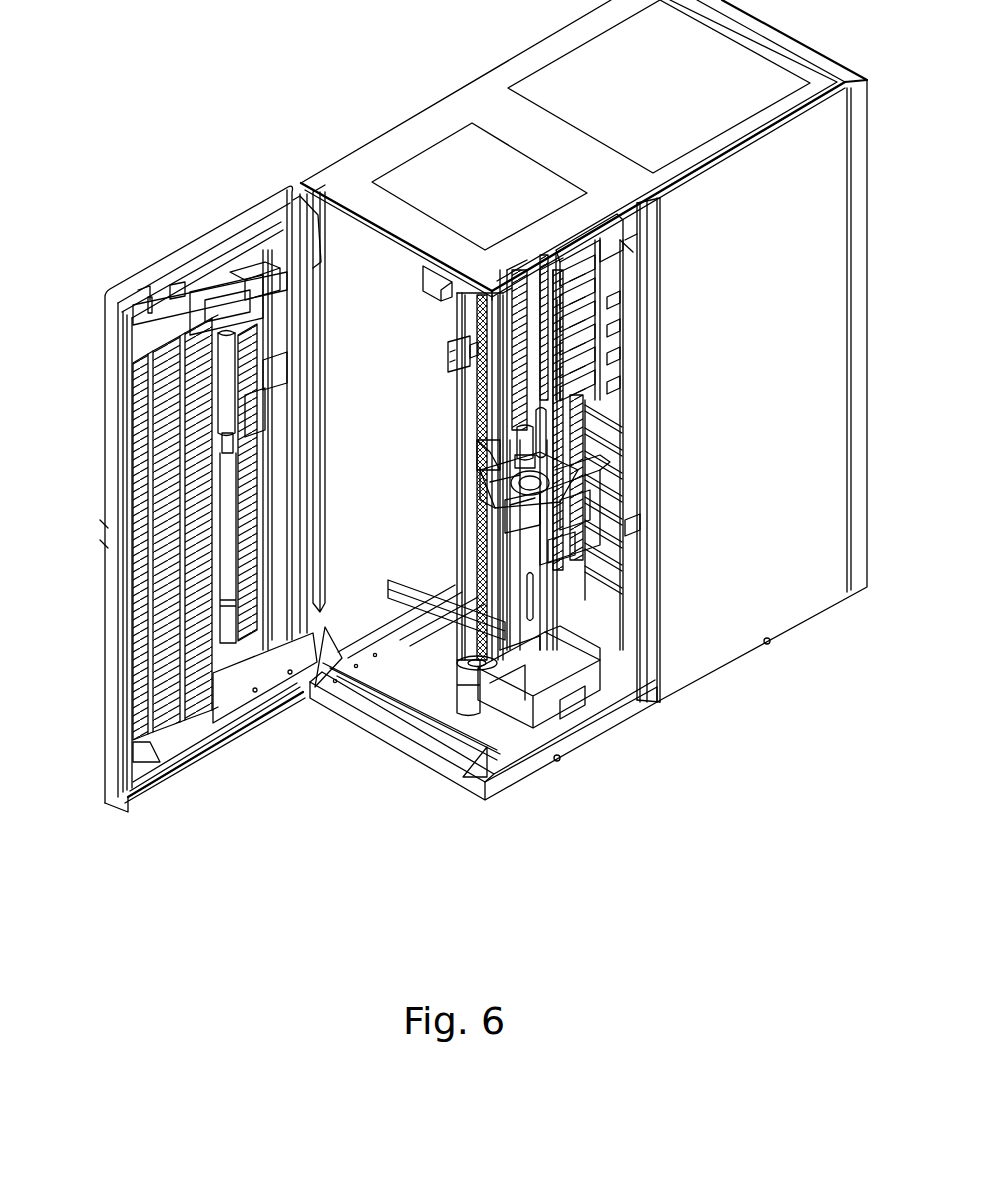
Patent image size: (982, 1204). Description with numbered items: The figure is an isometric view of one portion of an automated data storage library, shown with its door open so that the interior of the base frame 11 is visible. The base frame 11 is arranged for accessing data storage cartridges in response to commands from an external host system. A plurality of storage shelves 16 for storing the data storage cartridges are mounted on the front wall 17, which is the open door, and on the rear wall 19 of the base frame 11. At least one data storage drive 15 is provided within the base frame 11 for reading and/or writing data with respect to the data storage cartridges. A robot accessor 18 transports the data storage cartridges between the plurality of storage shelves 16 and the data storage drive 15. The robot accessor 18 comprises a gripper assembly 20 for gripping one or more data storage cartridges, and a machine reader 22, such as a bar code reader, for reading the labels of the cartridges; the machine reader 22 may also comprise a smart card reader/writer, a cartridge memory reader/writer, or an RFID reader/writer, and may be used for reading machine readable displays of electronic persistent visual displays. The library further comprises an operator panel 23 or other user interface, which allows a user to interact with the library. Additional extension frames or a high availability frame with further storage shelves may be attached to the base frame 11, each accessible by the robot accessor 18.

The base frame 11 is at (362, 812).
The data storage drive 15 is at (615, 285).
The storage shelves 16 is at (122, 618).
The front wall 17 is at (118, 466).
The robot accessor 18 is at (523, 710).
The rear wall 19 is at (467, 323).
The gripper assembly 20 is at (605, 500).
The machine reader 22 is at (500, 530).
The operator panel 23 is at (275, 313).